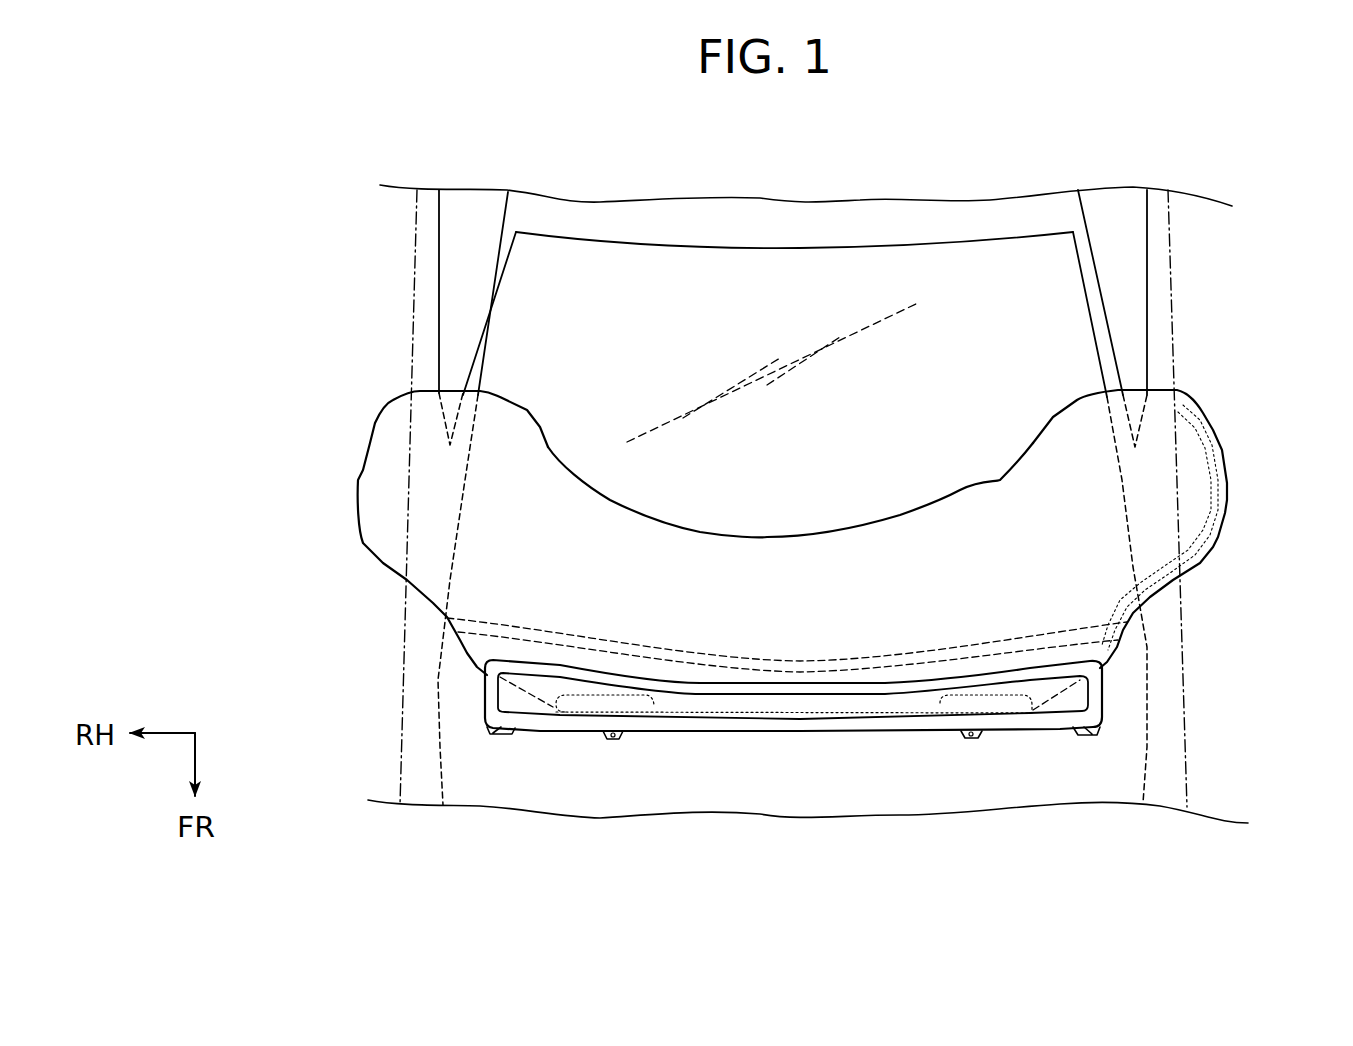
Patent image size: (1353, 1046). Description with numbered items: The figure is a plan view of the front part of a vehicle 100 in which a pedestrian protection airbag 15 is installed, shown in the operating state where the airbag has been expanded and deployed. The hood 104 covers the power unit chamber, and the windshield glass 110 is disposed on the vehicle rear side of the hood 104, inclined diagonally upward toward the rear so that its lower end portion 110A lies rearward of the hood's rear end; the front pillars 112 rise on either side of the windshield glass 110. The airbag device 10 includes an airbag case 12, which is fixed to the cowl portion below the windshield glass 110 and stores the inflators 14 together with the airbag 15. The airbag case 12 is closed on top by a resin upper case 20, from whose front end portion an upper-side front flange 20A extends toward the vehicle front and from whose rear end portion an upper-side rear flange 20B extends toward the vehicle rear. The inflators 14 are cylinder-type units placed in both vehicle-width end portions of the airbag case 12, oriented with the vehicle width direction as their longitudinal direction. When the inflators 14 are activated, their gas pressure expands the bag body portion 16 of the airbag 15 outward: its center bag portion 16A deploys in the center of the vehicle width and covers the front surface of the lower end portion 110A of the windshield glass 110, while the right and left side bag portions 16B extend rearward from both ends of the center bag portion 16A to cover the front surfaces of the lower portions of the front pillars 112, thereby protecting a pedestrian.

The vehicle 100 is at (1193, 250).
The airbag device 10 is at (1220, 577).
The airbag case 12 is at (995, 742).
The inflators 14 is at (657, 707).
The pedestrian protection airbag 15 is at (945, 483).
The bag body portion 16 is at (880, 527).
The center bag portion 16A is at (798, 537).
The side bag portions 16B is at (393, 440).
The upper case 20 is at (1105, 693).
The upper-side front flange 20A is at (765, 727).
The upper-side rear flange 20B is at (727, 682).
The hood 104 is at (1148, 737).
The windshield glass 110 is at (955, 260).
The lower end portion of the windshield glass 110A is at (1100, 548).
The front pillars 112 is at (537, 310).